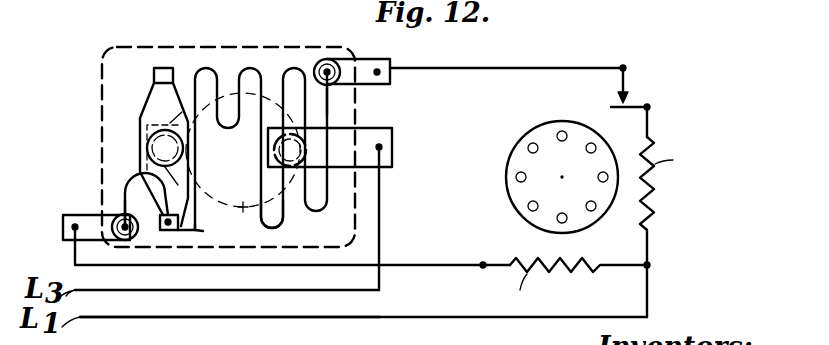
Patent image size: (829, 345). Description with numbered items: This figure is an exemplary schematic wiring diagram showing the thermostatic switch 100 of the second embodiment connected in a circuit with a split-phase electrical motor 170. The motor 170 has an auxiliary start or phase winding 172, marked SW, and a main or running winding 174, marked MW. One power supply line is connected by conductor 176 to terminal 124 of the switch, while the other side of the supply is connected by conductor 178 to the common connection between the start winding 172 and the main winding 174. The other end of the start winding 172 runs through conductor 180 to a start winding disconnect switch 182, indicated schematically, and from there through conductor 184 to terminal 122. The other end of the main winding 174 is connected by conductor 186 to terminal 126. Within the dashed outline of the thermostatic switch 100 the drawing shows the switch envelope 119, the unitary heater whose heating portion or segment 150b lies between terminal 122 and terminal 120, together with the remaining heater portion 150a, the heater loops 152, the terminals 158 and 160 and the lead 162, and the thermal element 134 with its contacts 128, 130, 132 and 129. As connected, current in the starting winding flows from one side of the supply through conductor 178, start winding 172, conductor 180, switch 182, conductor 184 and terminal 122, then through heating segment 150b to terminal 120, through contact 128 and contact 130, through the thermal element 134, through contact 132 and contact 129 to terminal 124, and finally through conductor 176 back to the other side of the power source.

The thermostatic switch 100 is at (98, 98).
The glow tube envelope 119 is at (148, 110).
The terminal 120 is at (168, 230).
The terminal 122 is at (390, 84).
The terminal 124 is at (392, 131).
The terminal 126 is at (63, 221).
The contact 128 is at (153, 137).
The contact 129 is at (275, 160).
The contact 130 is at (155, 150).
The contact 132 is at (273, 150).
The thermal element 134 is at (245, 222).
The heater coil end 150a is at (123, 195).
The heating portion or segment 150b is at (332, 112).
The heater coil 152 is at (250, 69).
The terminal 158 is at (113, 214).
The terminal 160 is at (314, 66).
The lead 162 is at (197, 228).
The motor 170 is at (492, 167).
The start or phase winding 172 is at (655, 201).
The main or running winding 174 is at (575, 272).
The conductor 176 is at (381, 290).
The conductor 178 is at (382, 320).
The conductor 180 is at (648, 127).
The start winding disconnect switch 182 is at (612, 104).
The conductor 184 is at (481, 69).
The conductor 186 is at (448, 264).